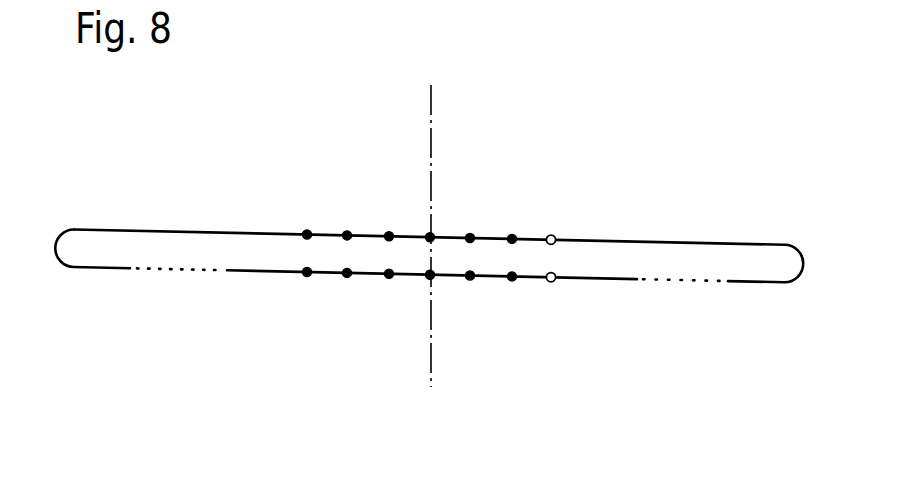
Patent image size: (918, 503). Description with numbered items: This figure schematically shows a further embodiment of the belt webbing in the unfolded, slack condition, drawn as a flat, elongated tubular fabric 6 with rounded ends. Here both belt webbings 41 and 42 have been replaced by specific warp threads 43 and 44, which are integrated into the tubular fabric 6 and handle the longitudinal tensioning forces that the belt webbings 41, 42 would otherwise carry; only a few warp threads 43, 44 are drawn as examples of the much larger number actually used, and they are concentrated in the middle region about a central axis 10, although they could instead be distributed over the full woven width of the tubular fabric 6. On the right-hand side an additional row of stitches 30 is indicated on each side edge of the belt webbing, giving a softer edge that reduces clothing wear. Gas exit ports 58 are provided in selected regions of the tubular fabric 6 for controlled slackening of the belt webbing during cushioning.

The tubular fabric 6 is at (760, 243).
The center axis line 10 is at (431, 108).
The row of stitches 30 is at (554, 234).
The belt webbing 41 is at (472, 280).
The belt webbing 42 is at (474, 232).
The warp threads 43 is at (388, 279).
The warp threads 44 is at (349, 232).
The gas exit ports 58 is at (172, 277).